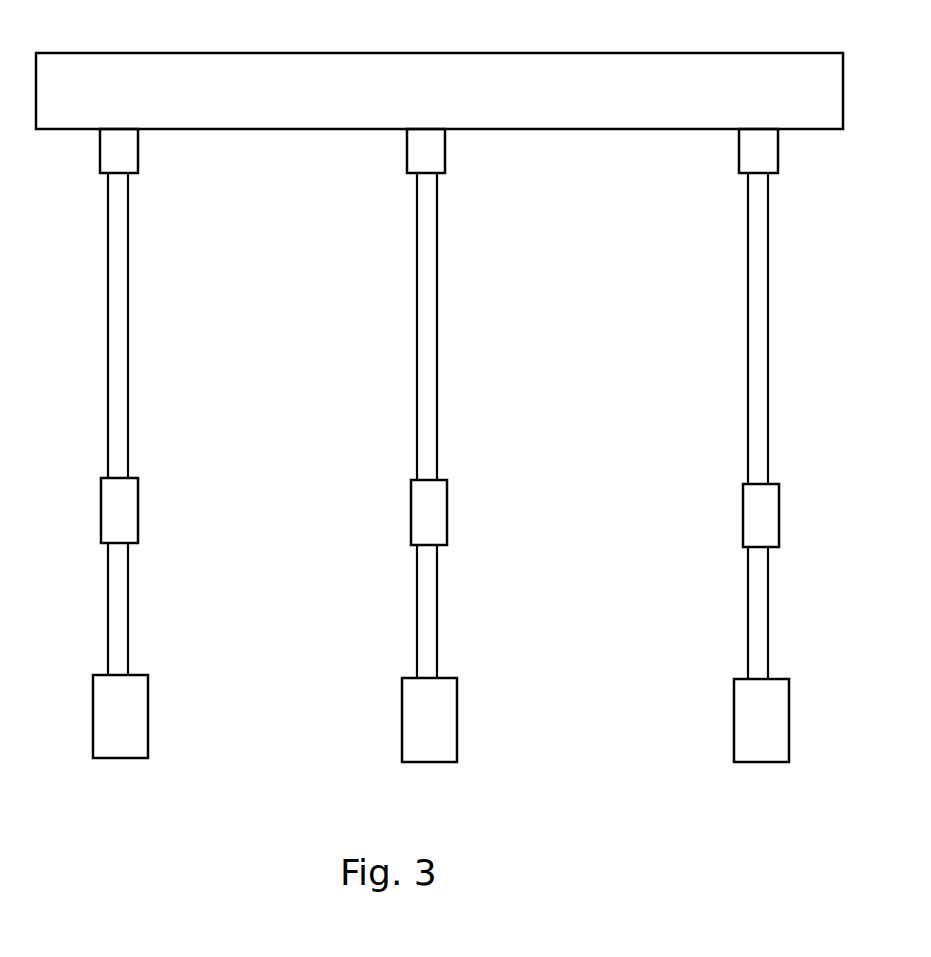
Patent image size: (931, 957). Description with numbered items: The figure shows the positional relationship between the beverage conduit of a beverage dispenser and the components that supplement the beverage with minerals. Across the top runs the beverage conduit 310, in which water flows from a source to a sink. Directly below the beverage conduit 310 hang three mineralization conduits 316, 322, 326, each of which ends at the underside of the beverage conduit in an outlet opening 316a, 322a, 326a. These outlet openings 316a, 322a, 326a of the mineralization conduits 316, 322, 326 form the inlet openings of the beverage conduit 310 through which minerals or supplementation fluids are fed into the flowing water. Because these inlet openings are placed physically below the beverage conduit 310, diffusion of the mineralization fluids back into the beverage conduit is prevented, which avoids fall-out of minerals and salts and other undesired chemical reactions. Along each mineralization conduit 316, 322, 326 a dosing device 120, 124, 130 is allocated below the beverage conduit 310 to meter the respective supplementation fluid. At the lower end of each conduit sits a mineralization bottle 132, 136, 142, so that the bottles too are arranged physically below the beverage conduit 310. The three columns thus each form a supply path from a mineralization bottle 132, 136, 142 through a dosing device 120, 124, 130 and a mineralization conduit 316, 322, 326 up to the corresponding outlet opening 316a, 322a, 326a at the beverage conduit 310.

The beverage conduit 310 is at (522, 72).
The outlet opening 316a is at (110, 162).
The mineralization conduit 316 is at (119, 338).
The dosing device 120 is at (110, 515).
The mineralization bottle 132 is at (114, 715).
The outlet opening 322a is at (423, 165).
The mineralization conduit 322 is at (425, 342).
The dosing device 124 is at (417, 518).
The mineralization bottle 136 is at (420, 718).
The outlet opening 326a is at (756, 167).
The mineralization conduit 326 is at (760, 343).
The dosing device 130 is at (752, 520).
The mineralization bottle 142 is at (757, 718).